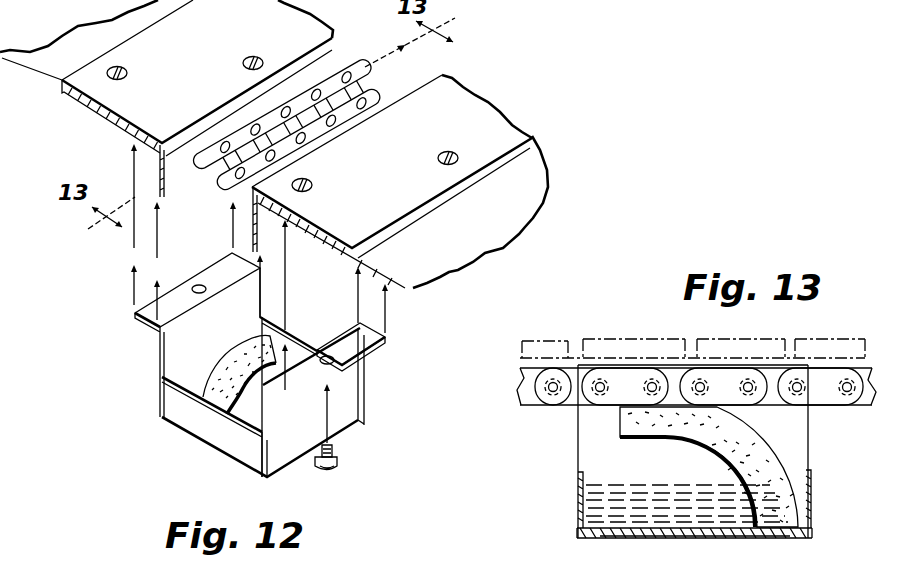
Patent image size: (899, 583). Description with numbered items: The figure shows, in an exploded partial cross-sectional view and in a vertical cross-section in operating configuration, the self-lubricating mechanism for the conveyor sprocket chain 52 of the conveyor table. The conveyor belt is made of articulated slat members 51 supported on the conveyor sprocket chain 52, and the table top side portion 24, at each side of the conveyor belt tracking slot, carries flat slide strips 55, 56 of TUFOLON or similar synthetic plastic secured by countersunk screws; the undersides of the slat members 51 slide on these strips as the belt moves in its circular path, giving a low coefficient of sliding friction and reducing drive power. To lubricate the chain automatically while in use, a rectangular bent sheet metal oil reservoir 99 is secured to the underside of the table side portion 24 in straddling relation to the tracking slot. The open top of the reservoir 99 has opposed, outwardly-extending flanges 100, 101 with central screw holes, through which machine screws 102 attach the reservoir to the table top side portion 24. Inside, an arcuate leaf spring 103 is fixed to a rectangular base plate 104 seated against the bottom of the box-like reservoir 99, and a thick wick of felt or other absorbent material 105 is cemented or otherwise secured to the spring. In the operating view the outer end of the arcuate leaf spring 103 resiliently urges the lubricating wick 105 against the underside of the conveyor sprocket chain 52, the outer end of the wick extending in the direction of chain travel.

In FIG. 12, the table side portion 24 is at (470, 181).
In FIG. 13, the slat member 51 is at (692, 336).
In FIG. 12, the conveyor sprocket chain 52 is at (285, 125).
In FIG. 13, the conveyor sprocket chain 52 is at (696, 407).
In FIG. 12, the slide strip 55 is at (392, 181).
In FIG. 12, the slide strip 56 is at (166, 98).
In FIG. 12, the oil reservoir 99 is at (239, 427).
In FIG. 13, the oil reservoir 99 is at (677, 451).
In FIG. 12, the flange 100 is at (175, 335).
In FIG. 12, the flange 101 is at (344, 397).
In FIG. 12, the machine screw 102 is at (352, 428).
In FIG. 12, the arcuate leaf spring 103 is at (267, 397).
In FIG. 13, the arcuate leaf spring 103 is at (687, 482).
In FIG. 13, the base plate 104 is at (695, 548).
In FIG. 12, the wick 105 is at (234, 366).
In FIG. 13, the wick 105 is at (709, 467).